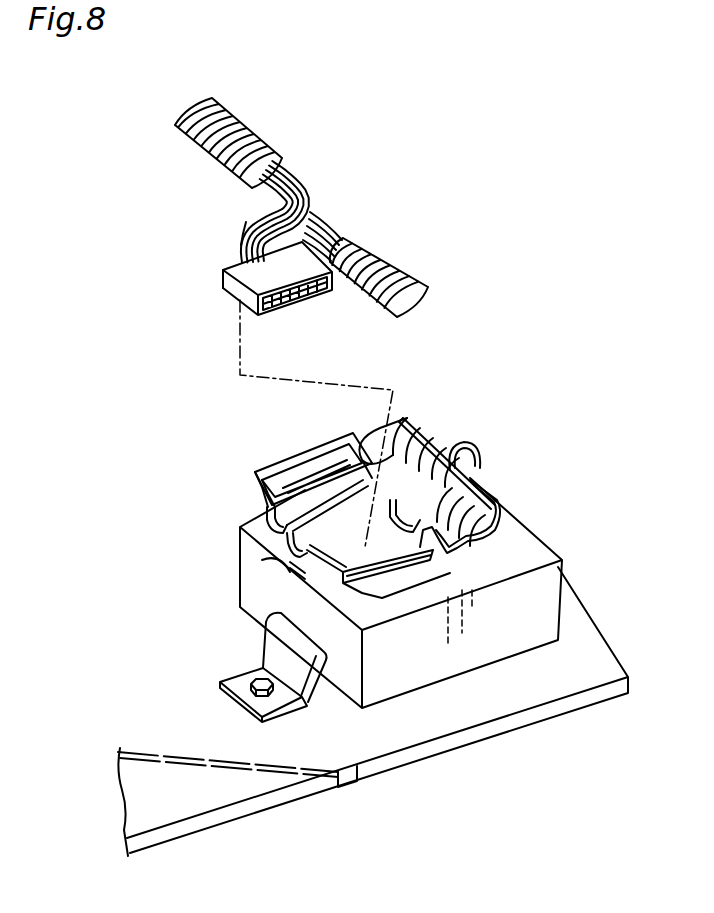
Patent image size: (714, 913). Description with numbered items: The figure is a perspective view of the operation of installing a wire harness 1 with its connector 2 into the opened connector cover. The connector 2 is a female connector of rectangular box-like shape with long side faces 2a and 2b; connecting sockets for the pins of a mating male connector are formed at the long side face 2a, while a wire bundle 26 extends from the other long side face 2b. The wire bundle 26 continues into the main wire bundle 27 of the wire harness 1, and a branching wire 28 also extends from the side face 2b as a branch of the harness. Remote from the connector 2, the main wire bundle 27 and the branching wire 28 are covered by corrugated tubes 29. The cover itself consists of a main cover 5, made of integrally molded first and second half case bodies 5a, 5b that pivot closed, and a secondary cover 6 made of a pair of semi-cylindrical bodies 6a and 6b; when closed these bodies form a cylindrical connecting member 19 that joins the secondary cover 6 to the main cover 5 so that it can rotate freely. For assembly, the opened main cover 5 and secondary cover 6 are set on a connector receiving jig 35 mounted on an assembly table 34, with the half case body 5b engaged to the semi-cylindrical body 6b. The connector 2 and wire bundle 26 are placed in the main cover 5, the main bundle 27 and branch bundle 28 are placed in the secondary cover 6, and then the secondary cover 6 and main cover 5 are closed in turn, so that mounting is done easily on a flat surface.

The wire harness 1 is at (328, 211).
The connector 2 is at (242, 292).
The long side face 2a is at (293, 303).
The long side face 2b is at (226, 270).
The main cover 5 is at (298, 450).
The first half case body 5a is at (287, 487).
The second half case body 5b is at (273, 557).
The secondary cover 6 is at (486, 453).
The semi-cylindrical body 6a is at (433, 460).
The semi-cylindrical body 6b is at (475, 480).
The cylindrical connecting member 19 is at (467, 442).
The wire bundle 26 is at (257, 220).
The main wire bundle 27 is at (296, 174).
The branching wire 28 is at (335, 228).
The corrugated tube 29 is at (220, 118).
The assembly table 34 is at (550, 673).
The connector receiving jig 35 is at (537, 597).